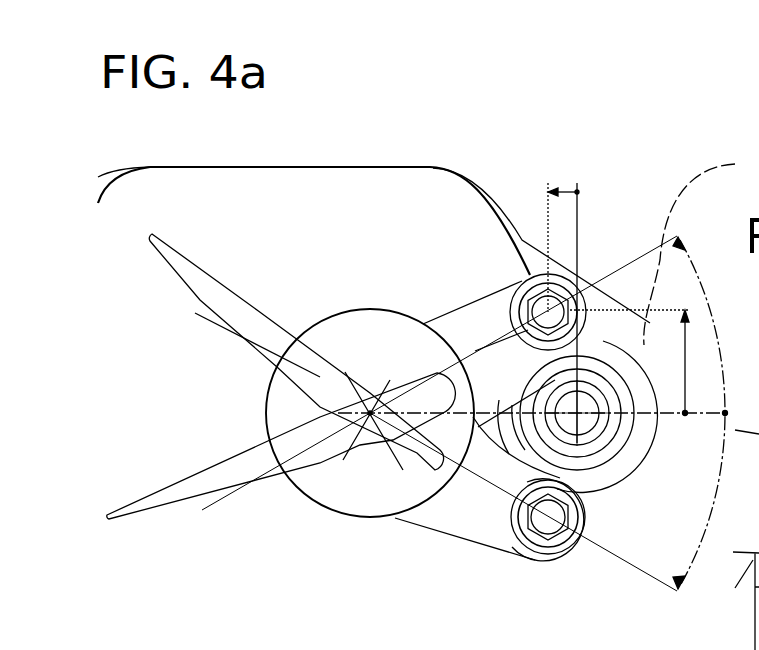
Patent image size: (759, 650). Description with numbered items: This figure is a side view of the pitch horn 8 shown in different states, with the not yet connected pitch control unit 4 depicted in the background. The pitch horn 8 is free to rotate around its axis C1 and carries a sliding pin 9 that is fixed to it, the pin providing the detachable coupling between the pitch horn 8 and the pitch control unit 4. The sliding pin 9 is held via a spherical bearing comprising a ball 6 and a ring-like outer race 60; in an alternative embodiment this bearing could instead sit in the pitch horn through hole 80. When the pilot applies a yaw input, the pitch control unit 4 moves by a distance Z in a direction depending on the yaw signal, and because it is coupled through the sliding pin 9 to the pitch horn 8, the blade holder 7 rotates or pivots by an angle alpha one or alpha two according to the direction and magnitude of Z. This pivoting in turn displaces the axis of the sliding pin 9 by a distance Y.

The pitch control unit 4 is at (585, 158).
The ball 6 is at (587, 387).
The ring-like outer race 60 is at (610, 375).
The blade holder 7 is at (325, 320).
The pitch horn 8 is at (483, 320).
The pitch horn through hole 80 is at (530, 277).
The sliding pin 9 is at (547, 310).
The axis of the pitch horn C1 is at (370, 413).